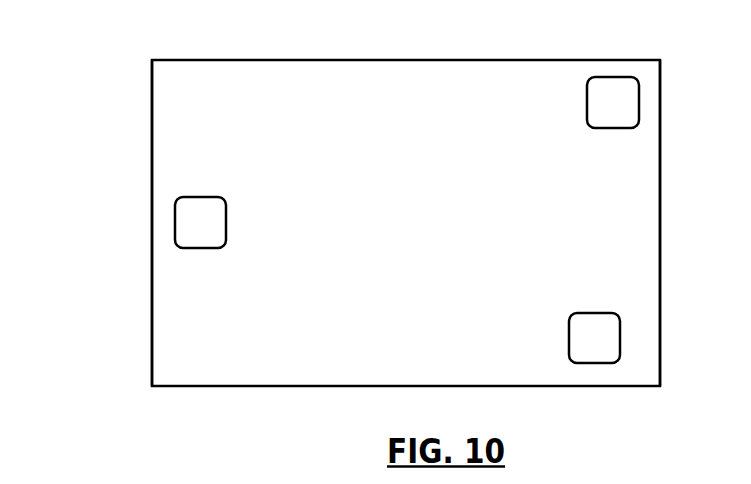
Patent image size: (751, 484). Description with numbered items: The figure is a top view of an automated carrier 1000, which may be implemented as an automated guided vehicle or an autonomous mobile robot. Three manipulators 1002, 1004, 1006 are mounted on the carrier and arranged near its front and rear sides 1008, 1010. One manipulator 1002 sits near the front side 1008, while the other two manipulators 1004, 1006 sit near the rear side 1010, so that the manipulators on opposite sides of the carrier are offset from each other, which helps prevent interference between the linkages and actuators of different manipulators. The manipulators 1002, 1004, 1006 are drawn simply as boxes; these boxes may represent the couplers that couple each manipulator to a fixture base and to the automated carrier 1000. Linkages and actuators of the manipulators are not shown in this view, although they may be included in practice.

The automated carrier 1000 is at (638, 60).
The manipulator 1002 is at (226, 218).
The manipulator 1004 is at (639, 97).
The manipulator 1006 is at (620, 330).
The front side 1008 is at (153, 173).
The rear side 1010 is at (660, 205).